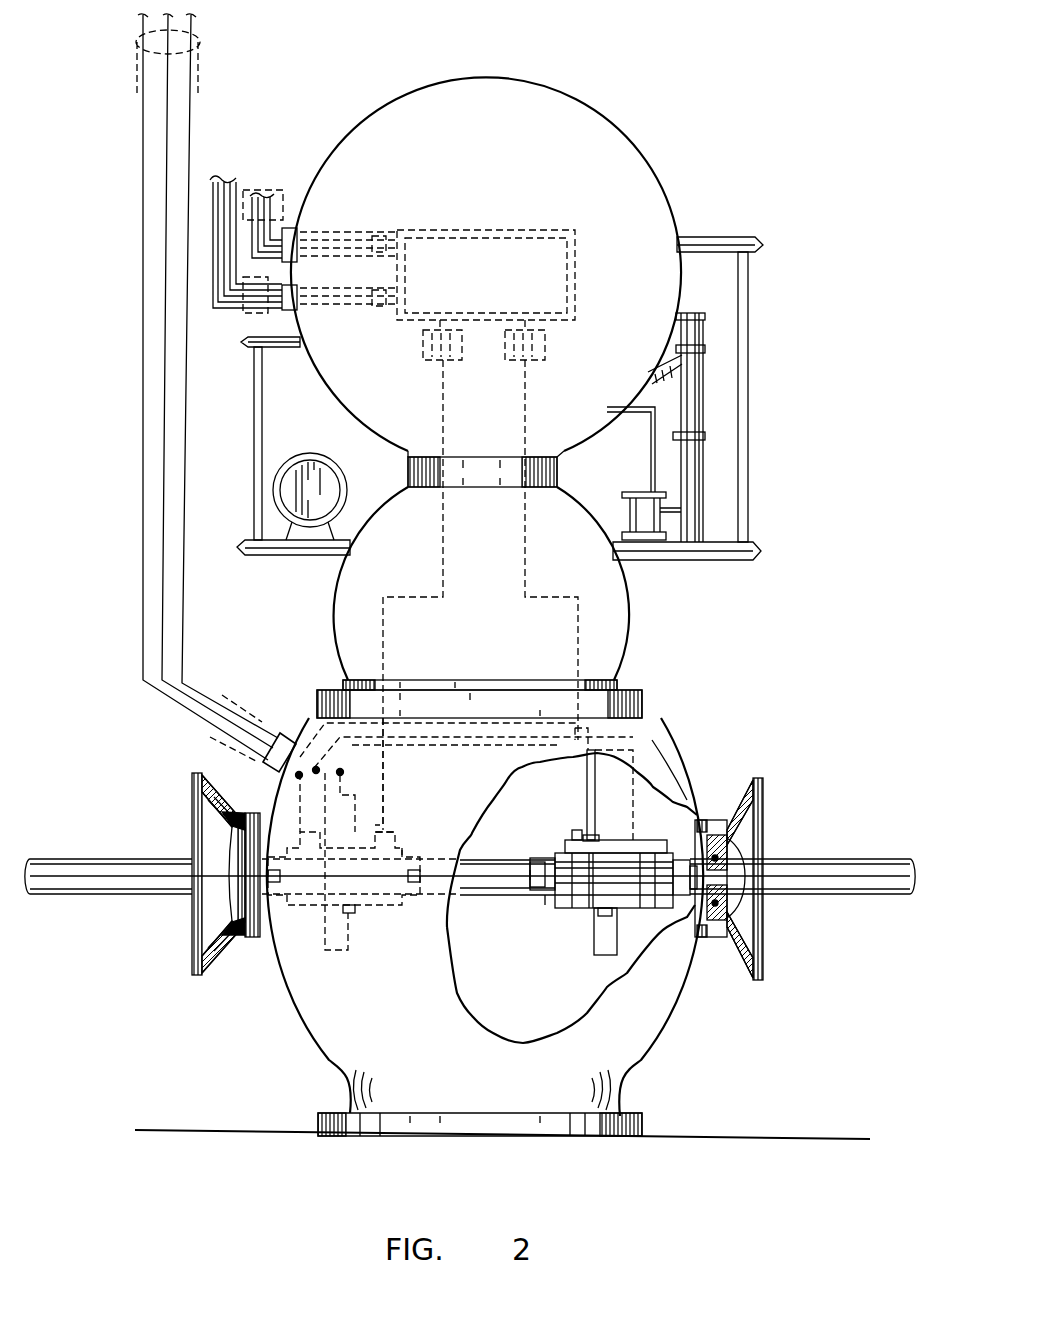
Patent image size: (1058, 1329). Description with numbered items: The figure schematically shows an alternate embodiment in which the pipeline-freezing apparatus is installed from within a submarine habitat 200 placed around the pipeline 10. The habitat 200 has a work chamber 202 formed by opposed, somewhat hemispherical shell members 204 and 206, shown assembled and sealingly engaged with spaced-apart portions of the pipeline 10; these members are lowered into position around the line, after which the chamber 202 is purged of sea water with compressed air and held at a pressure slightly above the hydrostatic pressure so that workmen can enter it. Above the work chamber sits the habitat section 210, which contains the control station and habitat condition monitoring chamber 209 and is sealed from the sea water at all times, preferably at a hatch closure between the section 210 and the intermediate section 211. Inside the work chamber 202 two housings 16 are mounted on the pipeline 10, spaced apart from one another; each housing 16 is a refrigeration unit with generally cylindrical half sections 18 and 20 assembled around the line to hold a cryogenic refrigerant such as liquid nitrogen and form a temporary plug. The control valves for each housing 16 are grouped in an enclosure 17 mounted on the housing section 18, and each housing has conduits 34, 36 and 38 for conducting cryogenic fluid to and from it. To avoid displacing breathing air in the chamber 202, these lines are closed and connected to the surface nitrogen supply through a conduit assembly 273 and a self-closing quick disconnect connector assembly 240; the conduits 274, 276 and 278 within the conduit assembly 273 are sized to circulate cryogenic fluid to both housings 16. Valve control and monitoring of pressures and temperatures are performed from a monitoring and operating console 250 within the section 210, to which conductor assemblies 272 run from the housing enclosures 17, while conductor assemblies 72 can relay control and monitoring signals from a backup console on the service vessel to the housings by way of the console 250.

The pipeline 10 is at (858, 863).
The housing 16 is at (368, 905).
The enclosure 17 is at (395, 832).
The housing section 18 is at (404, 850).
The housing section 20 is at (558, 910).
The conduit 34 is at (342, 776).
The conduit 36 is at (300, 790).
The conduit 38 is at (345, 952).
The conductor assemblies 72 is at (385, 238).
The submarine habitat 200 is at (678, 722).
The work chamber 202 is at (528, 1015).
The shell member 204 is at (690, 762).
The shell member 206 is at (655, 1033).
The control station and habitat condition monitoring chamber 209 is at (500, 208).
The habitat section 210 is at (545, 78).
The intermediate section 211 is at (632, 628).
The quick disconnect connector assembly 240 is at (266, 768).
The monitoring and operating console 250 is at (585, 300).
The conductor assemblies 272 is at (395, 795).
The conduit assembly 273 is at (250, 712).
The conduit 274 is at (185, 578).
The conduit 276 is at (143, 576).
The conduit 278 is at (143, 524).